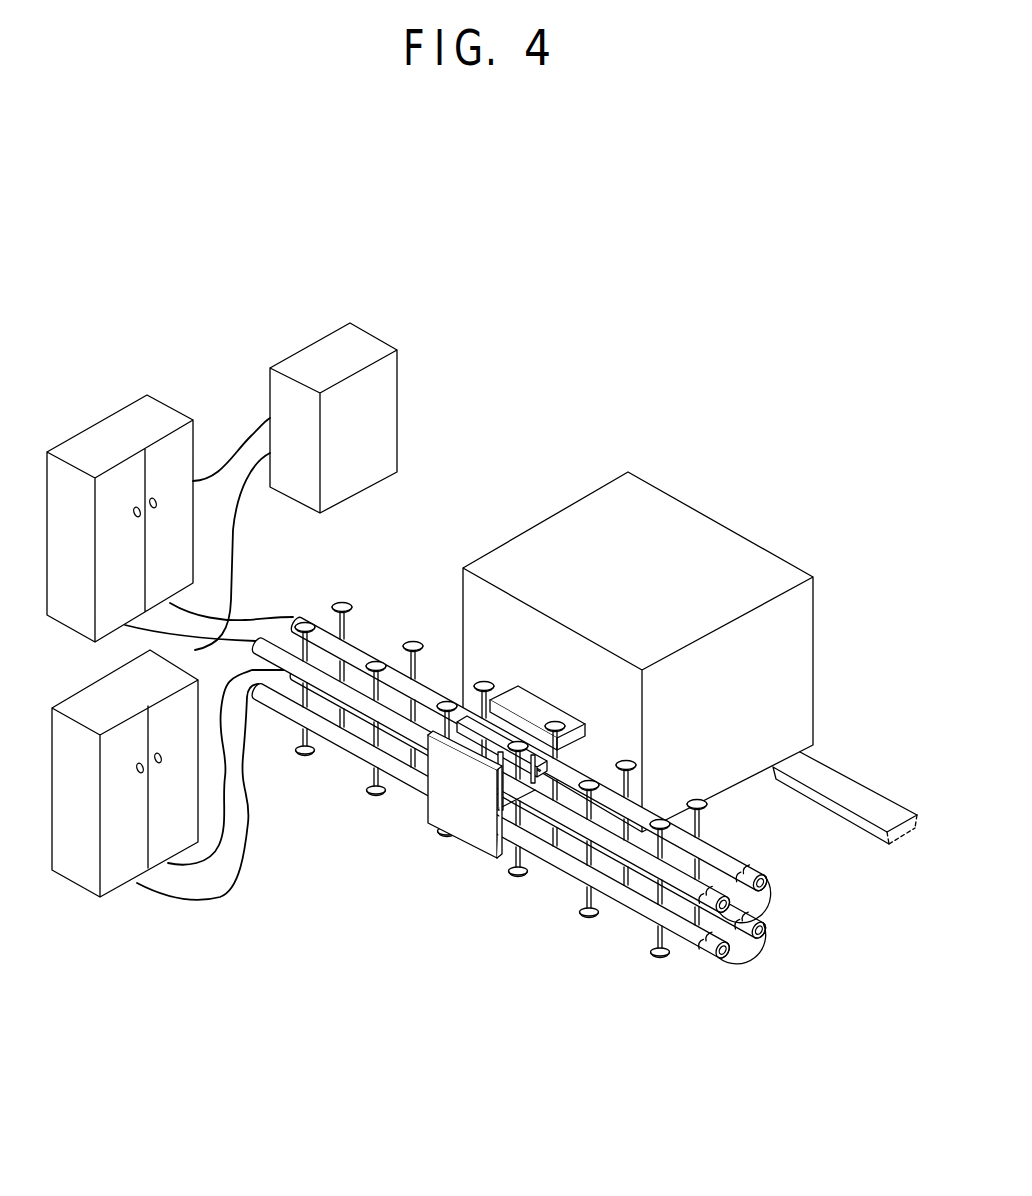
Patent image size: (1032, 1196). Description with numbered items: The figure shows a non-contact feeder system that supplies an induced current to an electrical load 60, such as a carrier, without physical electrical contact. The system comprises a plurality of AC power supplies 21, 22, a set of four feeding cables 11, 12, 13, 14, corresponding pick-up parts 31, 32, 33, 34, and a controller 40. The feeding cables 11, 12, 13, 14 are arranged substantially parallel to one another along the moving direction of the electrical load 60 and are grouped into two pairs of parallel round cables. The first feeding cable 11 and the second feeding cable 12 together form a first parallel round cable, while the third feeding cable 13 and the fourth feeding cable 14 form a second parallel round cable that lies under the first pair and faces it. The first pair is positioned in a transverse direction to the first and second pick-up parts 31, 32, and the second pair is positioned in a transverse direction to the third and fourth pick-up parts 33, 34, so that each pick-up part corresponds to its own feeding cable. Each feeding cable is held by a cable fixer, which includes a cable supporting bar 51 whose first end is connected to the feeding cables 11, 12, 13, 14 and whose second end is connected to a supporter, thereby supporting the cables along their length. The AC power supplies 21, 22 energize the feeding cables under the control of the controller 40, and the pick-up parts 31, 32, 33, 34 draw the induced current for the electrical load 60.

The first feeding cable 11 is at (328, 677).
The second feeding cable 12 is at (378, 649).
The third feeding cable 13 is at (513, 823).
The fourth feeding cable 14 is at (765, 927).
The AC power supply 21 is at (130, 402).
The AC power supply 22 is at (118, 890).
The first pick-up part 31 is at (438, 773).
The second pick-up part 32 is at (518, 705).
The third pick-up part 33 is at (465, 830).
The fourth pick-up part 34 is at (550, 798).
The controller 40 is at (302, 350).
The cable supporting bar 51 is at (592, 916).
The electrical load 60 is at (695, 535).